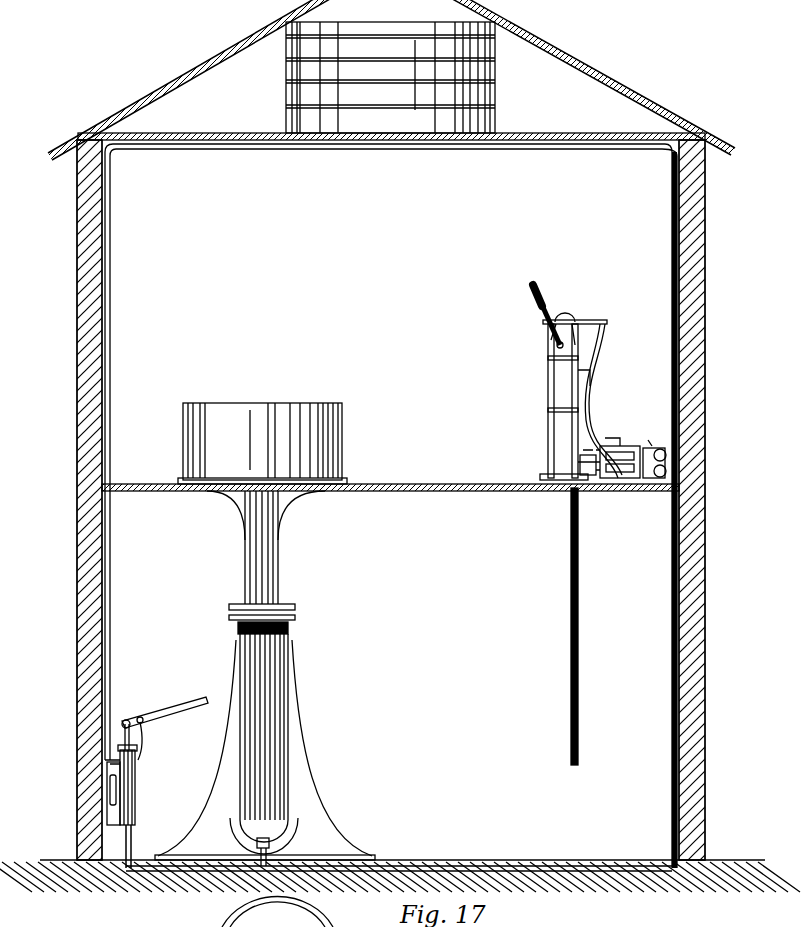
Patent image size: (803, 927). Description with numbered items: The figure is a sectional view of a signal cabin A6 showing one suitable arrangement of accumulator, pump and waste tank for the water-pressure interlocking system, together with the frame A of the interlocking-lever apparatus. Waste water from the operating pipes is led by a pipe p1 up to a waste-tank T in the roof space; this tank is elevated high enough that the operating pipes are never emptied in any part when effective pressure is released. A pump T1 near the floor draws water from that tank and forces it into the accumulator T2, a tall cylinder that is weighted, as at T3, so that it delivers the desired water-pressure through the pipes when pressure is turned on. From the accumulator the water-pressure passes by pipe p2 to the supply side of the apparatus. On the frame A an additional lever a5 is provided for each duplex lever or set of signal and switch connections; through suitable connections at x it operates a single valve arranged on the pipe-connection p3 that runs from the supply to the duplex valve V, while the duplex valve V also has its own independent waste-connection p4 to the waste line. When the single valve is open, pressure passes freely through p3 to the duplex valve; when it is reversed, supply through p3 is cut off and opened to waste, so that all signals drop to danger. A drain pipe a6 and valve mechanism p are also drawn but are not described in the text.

The waste-tank T is at (390, 77).
The pump T1 is at (156, 761).
The accumulator T2 is at (265, 678).
The accumulator weight T3 is at (262, 443).
The frame A is at (577, 400).
The cabin A6 is at (392, 500).
The additional lever a5 is at (554, 316).
The drain pipe a6 is at (565, 626).
The duplex valve V is at (589, 455).
The connections x is at (599, 401).
The pump mechanism p is at (631, 458).
The pipe p1 is at (653, 500).
The pipe p2 is at (670, 640).
The pipe-connection p3 is at (650, 446).
The independent waste-connection p4 is at (636, 482).